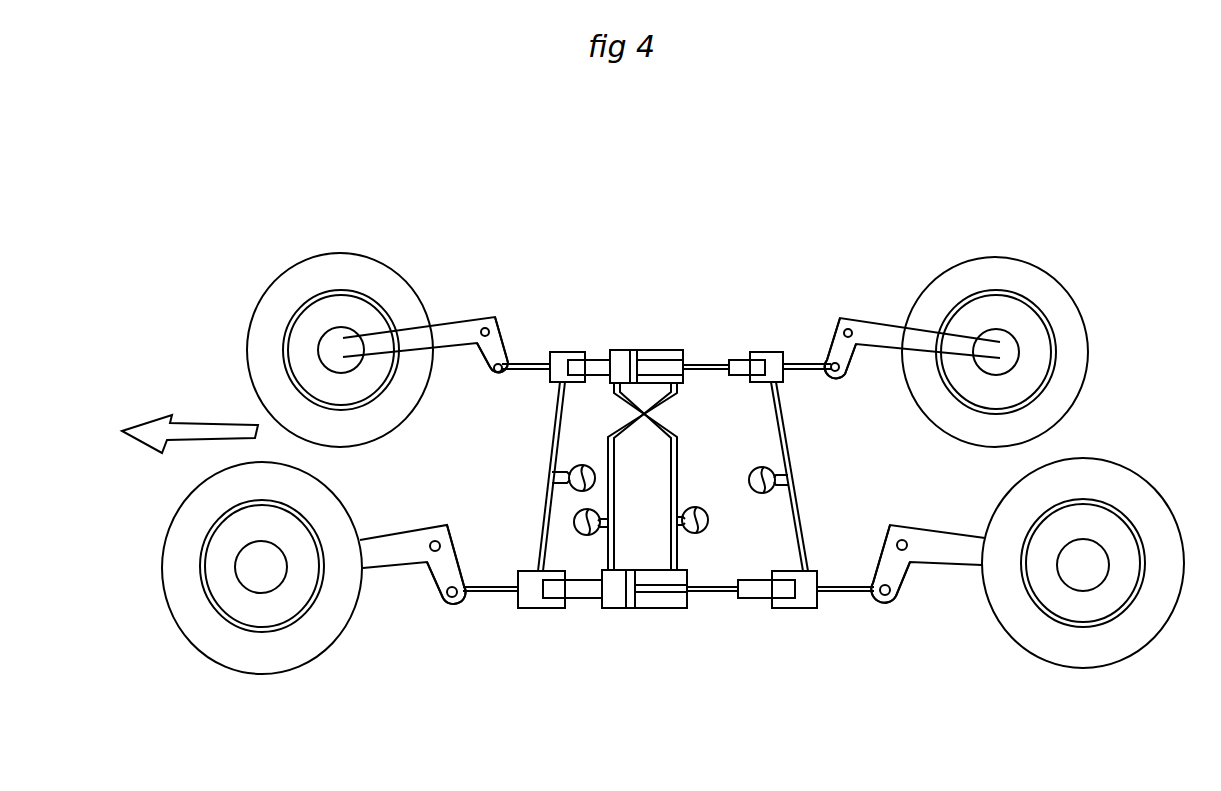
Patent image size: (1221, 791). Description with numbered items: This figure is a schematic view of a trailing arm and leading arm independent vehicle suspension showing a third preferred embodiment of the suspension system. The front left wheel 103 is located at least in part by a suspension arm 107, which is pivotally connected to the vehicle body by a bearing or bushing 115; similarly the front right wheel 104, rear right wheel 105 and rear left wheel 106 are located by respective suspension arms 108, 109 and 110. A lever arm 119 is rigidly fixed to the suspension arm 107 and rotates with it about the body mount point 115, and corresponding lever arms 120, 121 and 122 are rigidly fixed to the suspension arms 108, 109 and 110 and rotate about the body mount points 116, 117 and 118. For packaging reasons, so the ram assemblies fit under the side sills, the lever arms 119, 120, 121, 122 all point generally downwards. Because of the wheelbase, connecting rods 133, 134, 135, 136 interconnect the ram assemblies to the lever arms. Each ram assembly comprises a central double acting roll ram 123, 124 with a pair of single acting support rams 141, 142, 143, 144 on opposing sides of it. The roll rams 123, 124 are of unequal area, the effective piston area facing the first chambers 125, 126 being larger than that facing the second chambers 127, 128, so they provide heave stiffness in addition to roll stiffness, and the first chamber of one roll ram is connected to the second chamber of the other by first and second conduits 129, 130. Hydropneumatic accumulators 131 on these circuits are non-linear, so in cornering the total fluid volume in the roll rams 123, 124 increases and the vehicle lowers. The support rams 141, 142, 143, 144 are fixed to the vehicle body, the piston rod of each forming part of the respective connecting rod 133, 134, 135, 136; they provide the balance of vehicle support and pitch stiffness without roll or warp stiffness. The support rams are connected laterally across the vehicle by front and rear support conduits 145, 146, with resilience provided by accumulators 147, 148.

The front left wheel 103 is at (237, 657).
The front right wheel 104 is at (305, 280).
The rear right wheel 105 is at (1025, 280).
The rear left wheel 106 is at (1058, 647).
The suspension arm 107 is at (388, 555).
The suspension arm 108 is at (455, 327).
The suspension arm 109 is at (882, 332).
The suspension arm 110 is at (938, 549).
The bearing or bushing 115 is at (432, 567).
The body mount point 116 is at (491, 329).
The body mount point 117 is at (847, 328).
The body mount point 118 is at (900, 538).
The lever arm 119 is at (453, 562).
The lever arm 120 is at (500, 343).
The lever arm 121 is at (835, 347).
The lever arm 122 is at (887, 565).
The central double acting roll ram 123 is at (650, 616).
The central double acting roll ram 124 is at (658, 335).
The first chamber 125 is at (615, 597).
The first chamber 126 is at (620, 358).
The second chamber 127 is at (663, 352).
The second chamber 128 is at (667, 600).
The first conduit 129 is at (615, 457).
The second conduit 130 is at (670, 493).
The hydropneumatic accumulators 131 is at (677, 525).
The connecting rod 133 is at (483, 596).
The connecting rod 134 is at (532, 371).
The connecting rod 135 is at (808, 372).
The connecting rod 136 is at (852, 594).
The single acting support ram 141 is at (536, 614).
The single acting support ram 142 is at (573, 346).
The single acting support ram 143 is at (758, 346).
The single acting support ram 144 is at (803, 617).
The front support conduit 145 is at (550, 451).
The rear support conduit 146 is at (790, 442).
The accumulator 147 is at (580, 464).
The accumulator 148 is at (750, 466).